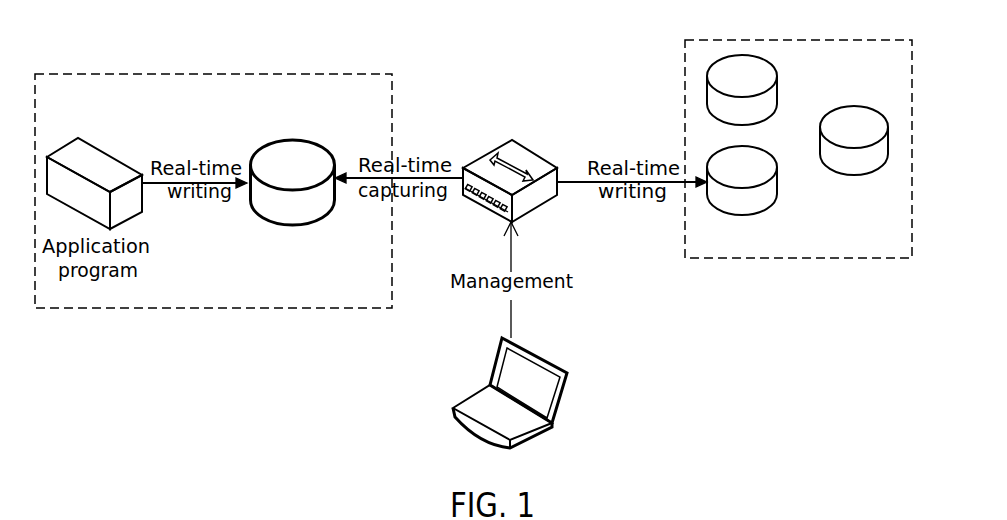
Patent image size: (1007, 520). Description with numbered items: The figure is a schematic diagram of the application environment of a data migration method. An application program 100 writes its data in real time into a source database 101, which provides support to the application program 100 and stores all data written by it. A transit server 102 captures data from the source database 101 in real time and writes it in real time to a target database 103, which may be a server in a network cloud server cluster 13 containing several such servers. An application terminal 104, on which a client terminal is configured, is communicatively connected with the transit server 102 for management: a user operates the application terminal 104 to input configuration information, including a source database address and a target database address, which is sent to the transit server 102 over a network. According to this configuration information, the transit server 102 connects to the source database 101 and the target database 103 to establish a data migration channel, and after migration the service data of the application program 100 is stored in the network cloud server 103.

The application program 100 is at (112, 160).
The source database 101 is at (302, 140).
The transit server 102 is at (522, 145).
The target database 103 is at (765, 77).
The application terminal 104 is at (550, 358).
The network cloud server cluster 13 is at (840, 35).